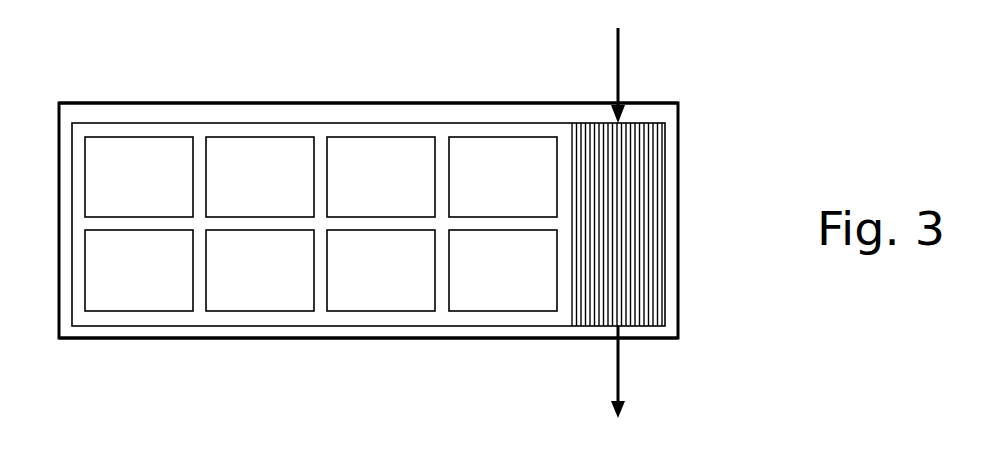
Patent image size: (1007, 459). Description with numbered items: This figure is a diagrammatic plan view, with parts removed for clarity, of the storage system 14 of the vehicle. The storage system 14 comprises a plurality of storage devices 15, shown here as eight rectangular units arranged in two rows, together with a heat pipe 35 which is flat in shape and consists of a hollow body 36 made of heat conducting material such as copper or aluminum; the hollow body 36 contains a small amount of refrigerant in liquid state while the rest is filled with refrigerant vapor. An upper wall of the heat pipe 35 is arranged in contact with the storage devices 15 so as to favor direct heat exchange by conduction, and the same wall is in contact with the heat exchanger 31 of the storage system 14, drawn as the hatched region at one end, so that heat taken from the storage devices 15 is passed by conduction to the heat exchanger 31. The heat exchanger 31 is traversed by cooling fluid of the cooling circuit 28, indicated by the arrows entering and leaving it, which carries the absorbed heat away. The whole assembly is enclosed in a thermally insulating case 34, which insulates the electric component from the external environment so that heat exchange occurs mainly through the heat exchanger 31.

The storage system 14 is at (304, 82).
The storage devices 15 is at (321, 224).
The cooling circuit 28 is at (620, 53).
The heat exchanger 31 is at (645, 202).
The thermally insulating case 34 is at (158, 102).
The heat pipe 35 is at (292, 355).
The hollow body 36 is at (437, 317).